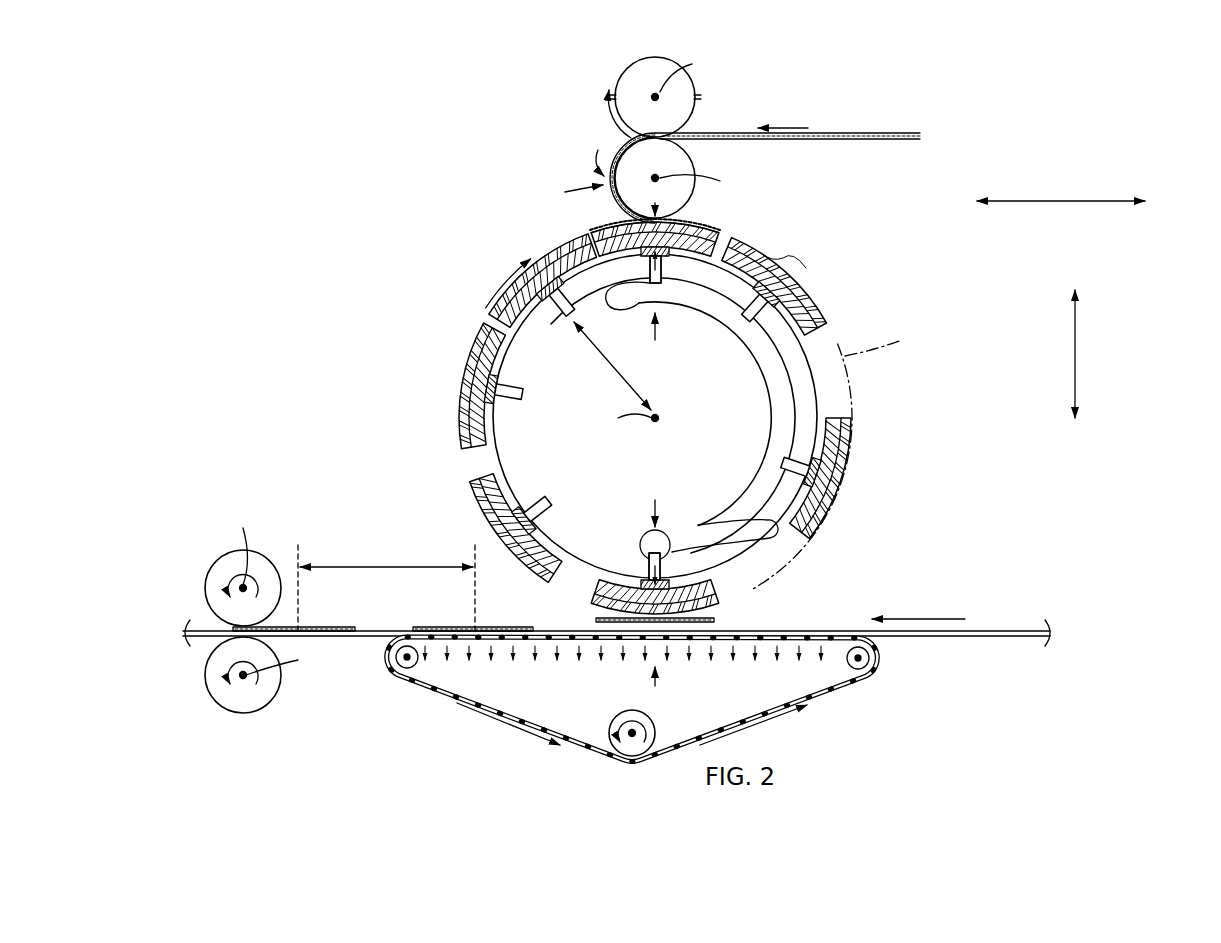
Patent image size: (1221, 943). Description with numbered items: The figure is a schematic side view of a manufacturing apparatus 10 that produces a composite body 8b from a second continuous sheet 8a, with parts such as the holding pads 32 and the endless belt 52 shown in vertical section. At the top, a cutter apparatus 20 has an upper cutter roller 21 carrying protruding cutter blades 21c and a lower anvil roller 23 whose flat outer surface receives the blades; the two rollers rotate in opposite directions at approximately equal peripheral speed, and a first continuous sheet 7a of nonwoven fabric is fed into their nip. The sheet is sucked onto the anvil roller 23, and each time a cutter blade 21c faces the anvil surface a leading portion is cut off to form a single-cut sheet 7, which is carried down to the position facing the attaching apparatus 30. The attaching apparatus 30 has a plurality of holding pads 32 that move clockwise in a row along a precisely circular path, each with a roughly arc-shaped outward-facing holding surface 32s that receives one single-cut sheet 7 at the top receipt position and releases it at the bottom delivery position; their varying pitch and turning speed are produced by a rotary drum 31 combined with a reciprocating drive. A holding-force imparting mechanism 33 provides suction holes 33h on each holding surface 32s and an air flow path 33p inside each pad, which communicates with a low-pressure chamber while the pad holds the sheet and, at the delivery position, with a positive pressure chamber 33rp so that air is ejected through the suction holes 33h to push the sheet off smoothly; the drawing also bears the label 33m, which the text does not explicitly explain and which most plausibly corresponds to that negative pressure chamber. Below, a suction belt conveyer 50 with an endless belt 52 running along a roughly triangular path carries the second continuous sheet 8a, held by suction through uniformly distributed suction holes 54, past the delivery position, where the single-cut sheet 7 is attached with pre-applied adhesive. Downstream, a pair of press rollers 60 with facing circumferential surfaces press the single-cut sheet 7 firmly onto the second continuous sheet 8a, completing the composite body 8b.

The manufacturing apparatus 10 is at (427, 163).
The cutter apparatus 20 is at (595, 118).
The cutter roller 21 is at (697, 82).
The cutter blades 21c is at (610, 93).
The anvil roller 23 is at (696, 164).
The first continuous sheet 7a is at (856, 133).
The single-cut sheet 7 is at (620, 222).
The attaching apparatus 30 is at (448, 312).
The rotary drum 31 is at (492, 456).
The holding pads 32 is at (565, 238).
The holding surface 32s is at (700, 224).
The holding-force imparting mechanism 33 is at (728, 350).
The suction passage 33m is at (796, 380).
The air flow path 33p is at (650, 283).
The positive pressure chamber 33rp is at (641, 535).
The suction holes 33h is at (775, 262).
The press rollers 60 is at (270, 561).
The composite body 8b is at (360, 638).
The second continuous sheet 8a is at (1000, 630).
The suction belt conveyer 50 is at (820, 705).
The endless belt 52 is at (632, 699).
The suction holes 54 is at (673, 643).